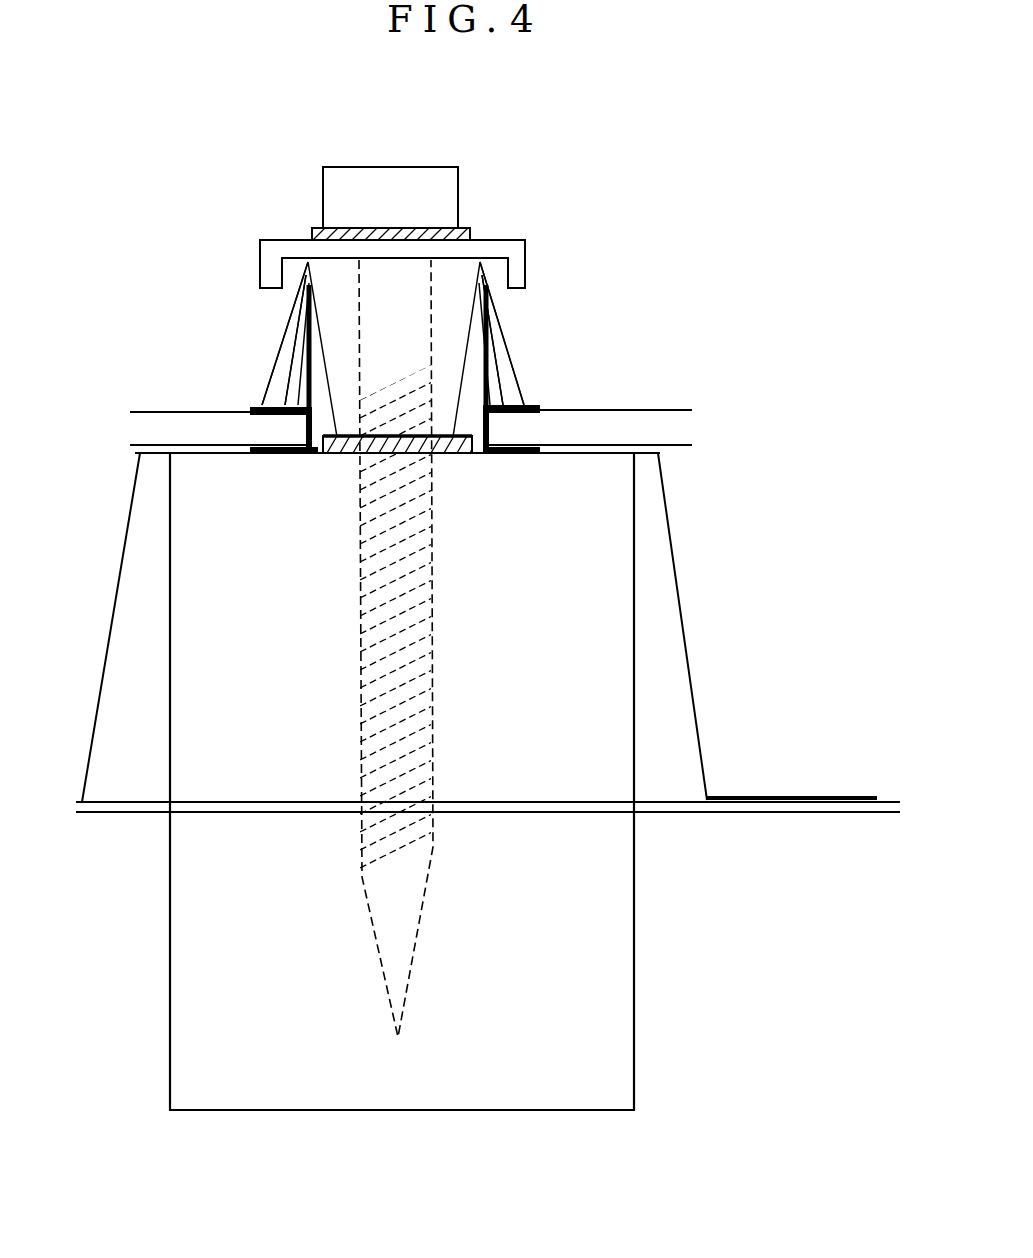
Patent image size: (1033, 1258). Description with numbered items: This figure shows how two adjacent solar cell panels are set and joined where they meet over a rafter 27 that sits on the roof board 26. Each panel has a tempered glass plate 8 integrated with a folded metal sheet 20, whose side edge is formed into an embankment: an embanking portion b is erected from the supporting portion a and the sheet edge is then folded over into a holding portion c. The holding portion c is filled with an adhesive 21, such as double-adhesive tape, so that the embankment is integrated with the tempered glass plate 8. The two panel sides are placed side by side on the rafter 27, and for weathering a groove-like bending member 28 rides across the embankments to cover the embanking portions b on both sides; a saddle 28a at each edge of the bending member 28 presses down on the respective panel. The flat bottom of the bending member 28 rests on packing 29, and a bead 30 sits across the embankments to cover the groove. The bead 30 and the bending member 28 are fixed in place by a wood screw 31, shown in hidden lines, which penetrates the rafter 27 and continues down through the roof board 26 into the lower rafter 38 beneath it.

The tempered glass plate 8 is at (670, 410).
The metal sheet 20 is at (791, 797).
The adhesive 21 is at (540, 409).
The roof board 26 is at (507, 803).
The rafter 27 is at (615, 774).
The groove-like bending member 28 is at (460, 372).
The saddle 28a is at (510, 404).
The packing 29 is at (456, 455).
The bead 30 is at (513, 240).
The wood screw 31 is at (434, 628).
The lower rafter 38 is at (625, 1013).
The supporting portion a is at (572, 455).
The embanking portion b is at (494, 338).
The holding portion c is at (507, 398).